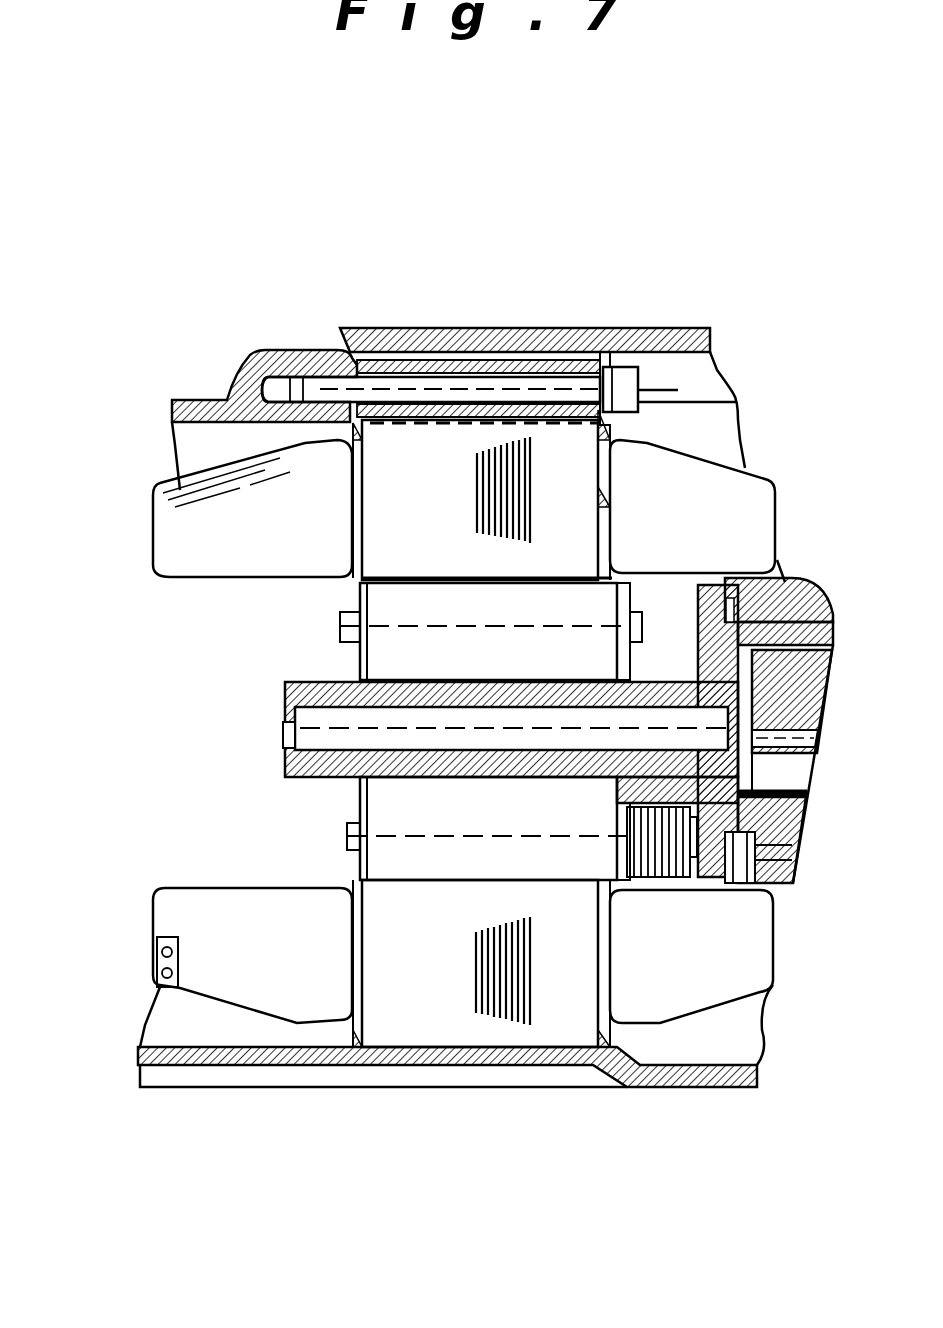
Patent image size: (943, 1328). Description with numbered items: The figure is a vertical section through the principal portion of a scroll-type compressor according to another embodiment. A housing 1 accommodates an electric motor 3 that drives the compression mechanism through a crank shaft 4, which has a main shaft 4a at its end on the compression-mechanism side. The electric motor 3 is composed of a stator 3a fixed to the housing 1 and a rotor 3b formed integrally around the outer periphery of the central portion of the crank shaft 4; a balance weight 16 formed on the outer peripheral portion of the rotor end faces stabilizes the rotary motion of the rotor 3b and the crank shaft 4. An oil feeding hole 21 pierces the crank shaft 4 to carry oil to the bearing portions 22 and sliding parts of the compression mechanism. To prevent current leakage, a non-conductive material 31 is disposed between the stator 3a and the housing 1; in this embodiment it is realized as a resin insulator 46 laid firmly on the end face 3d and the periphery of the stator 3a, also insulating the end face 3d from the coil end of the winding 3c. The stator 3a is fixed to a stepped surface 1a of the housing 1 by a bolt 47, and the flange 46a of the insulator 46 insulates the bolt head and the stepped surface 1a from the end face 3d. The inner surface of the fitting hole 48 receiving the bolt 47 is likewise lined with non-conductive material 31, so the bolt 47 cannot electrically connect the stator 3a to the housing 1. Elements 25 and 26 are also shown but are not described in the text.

The housing 1 is at (415, 1072).
The stepped surface 1a is at (343, 520).
The electric motor 3 is at (590, 1197).
The stator 3a is at (553, 987).
The rotor 3b is at (468, 872).
The winding 3c is at (240, 487).
The end face 3d is at (352, 540).
The crank shaft 4 is at (453, 780).
The main shaft 4a is at (770, 868).
The balance weight 16 is at (655, 850).
The oil feeding hole 21 is at (362, 740).
The bearing portion 22 is at (807, 647).
The cover plate 25 is at (397, 330).
The spacer plate 26 is at (493, 328).
The non-conductive material 31 is at (497, 562).
The insulator 46 is at (340, 375).
The flange 46a is at (337, 440).
The bolt 47 is at (625, 405).
The fitting hole 48 is at (470, 400).